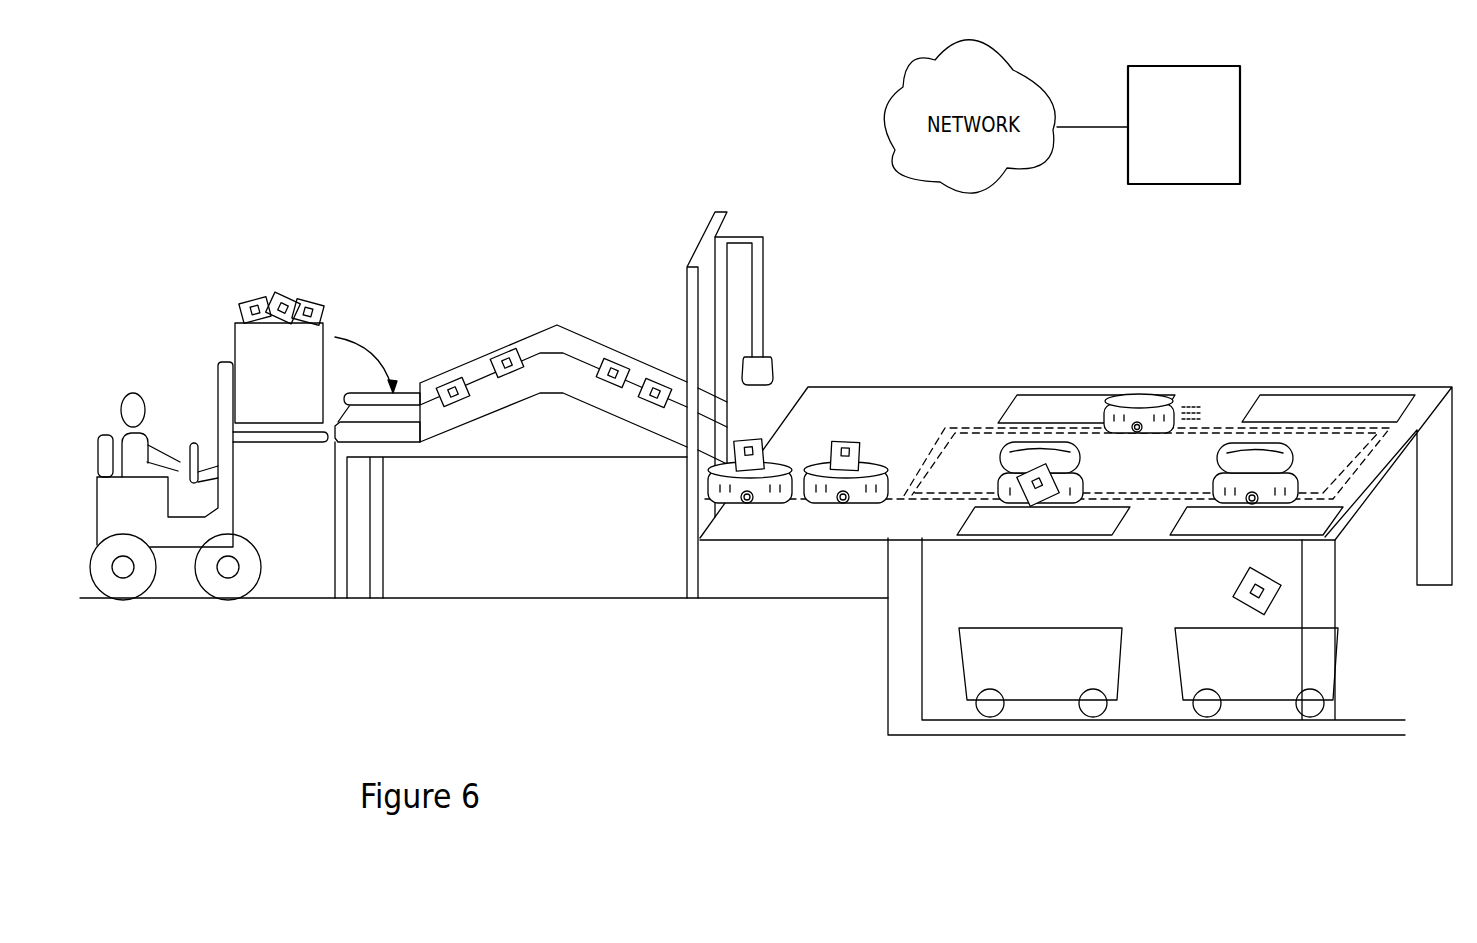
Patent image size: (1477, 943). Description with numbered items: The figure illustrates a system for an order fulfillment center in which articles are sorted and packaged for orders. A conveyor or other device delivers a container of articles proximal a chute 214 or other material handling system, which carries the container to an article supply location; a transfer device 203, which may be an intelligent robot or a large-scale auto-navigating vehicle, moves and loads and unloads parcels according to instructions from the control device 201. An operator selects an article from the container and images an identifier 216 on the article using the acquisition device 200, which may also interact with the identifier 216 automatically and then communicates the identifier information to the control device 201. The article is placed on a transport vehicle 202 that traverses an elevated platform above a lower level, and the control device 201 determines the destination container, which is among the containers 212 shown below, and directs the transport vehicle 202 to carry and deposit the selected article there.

The acquisition device 200 is at (765, 348).
The control device 201 is at (1184, 125).
The transport vehicle 202 is at (823, 515).
The transfer device 203 is at (181, 547).
The cart / container 212 is at (1042, 687).
The chute 214 is at (548, 337).
The identifier 216 is at (453, 382).